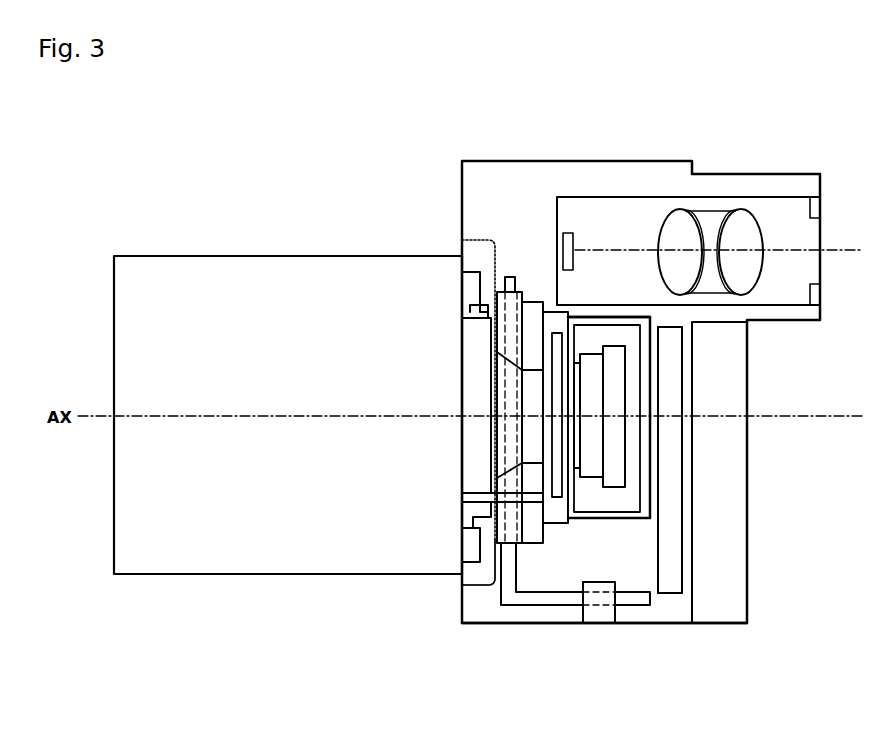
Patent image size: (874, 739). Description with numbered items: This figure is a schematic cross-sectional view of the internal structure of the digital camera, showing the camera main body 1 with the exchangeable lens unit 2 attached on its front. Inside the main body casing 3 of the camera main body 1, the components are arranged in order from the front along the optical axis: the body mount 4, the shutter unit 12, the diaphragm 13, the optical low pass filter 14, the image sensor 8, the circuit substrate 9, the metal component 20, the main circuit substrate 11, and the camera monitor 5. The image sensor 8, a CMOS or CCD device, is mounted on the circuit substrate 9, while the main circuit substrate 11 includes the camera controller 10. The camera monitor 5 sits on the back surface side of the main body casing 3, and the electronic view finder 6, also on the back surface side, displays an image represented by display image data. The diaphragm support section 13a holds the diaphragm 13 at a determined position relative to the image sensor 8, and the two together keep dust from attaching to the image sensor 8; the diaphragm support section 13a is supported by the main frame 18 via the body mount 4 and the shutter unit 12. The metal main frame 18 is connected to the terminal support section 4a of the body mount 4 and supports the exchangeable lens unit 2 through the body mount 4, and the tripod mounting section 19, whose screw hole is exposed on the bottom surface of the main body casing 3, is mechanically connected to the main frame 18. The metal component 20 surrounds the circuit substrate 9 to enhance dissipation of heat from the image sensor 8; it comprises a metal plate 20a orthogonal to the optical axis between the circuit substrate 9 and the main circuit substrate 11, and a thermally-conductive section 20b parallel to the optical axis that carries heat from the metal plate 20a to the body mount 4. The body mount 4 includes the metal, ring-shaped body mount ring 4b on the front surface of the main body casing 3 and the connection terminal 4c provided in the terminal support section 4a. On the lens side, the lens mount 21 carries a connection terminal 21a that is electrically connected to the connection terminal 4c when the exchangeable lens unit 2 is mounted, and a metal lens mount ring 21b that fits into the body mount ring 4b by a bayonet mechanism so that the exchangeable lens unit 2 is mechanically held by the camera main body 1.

The camera main body 1 is at (726, 170).
The exchangeable lens unit 2 is at (188, 256).
The main body casing 3 is at (554, 624).
The body mount 4 is at (486, 243).
The terminal support section 4a is at (491, 556).
The body mount ring 4b is at (467, 272).
The connection terminal 4c is at (487, 548).
The camera monitor 5 is at (737, 375).
The electronic view finder 6 is at (801, 242).
The image sensor 8 is at (597, 436).
The circuit substrate 9 is at (618, 418).
The camera controller 10 is at (668, 397).
The main circuit substrate 11 is at (668, 397).
The shutter unit 12 is at (533, 530).
The diaphragm 13 is at (558, 482).
The diaphragm support section 13a is at (557, 517).
The optical low pass filter 14 is at (575, 452).
The main frame 18 is at (508, 277).
The tripod mounting section 19 is at (603, 626).
The metal component 20 is at (615, 319).
The metal plate 20a is at (677, 340).
The thermally-conductive section 20b is at (588, 320).
The lens mount 21 is at (468, 450).
The connection terminal 21a is at (463, 500).
The lens mount ring 21b is at (463, 313).